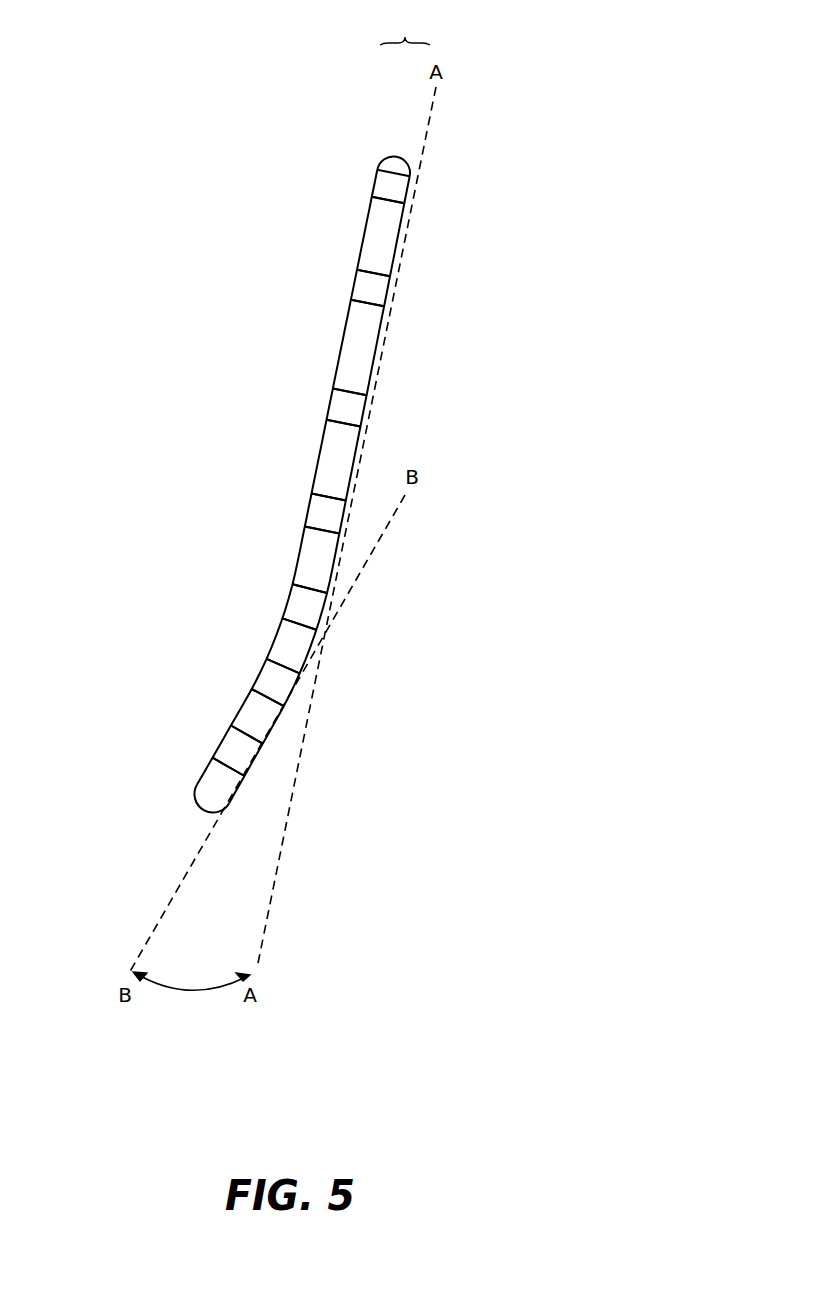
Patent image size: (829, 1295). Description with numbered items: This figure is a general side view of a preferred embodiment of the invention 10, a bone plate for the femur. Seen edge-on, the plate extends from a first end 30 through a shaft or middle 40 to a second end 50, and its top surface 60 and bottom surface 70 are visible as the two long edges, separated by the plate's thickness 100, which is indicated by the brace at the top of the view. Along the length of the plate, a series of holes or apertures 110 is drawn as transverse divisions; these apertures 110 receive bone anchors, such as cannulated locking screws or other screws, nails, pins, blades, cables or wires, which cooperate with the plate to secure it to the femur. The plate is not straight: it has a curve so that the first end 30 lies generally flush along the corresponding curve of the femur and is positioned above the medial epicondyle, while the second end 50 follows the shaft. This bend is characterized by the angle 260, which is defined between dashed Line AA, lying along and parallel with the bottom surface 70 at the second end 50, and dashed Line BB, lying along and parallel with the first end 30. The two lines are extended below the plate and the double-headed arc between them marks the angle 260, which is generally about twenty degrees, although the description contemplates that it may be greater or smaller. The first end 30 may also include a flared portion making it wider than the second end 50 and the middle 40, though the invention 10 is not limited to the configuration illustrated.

The invention 10 is at (295, 477).
The first end 30 is at (203, 794).
The shaft or middle 40 is at (367, 360).
The second end 50 is at (406, 161).
The top surface 60 is at (343, 348).
The bottom surface 70 is at (390, 317).
The thickness 100 is at (405, 25).
The holes or apertures 110 is at (370, 187).
The angle 260 is at (183, 990).